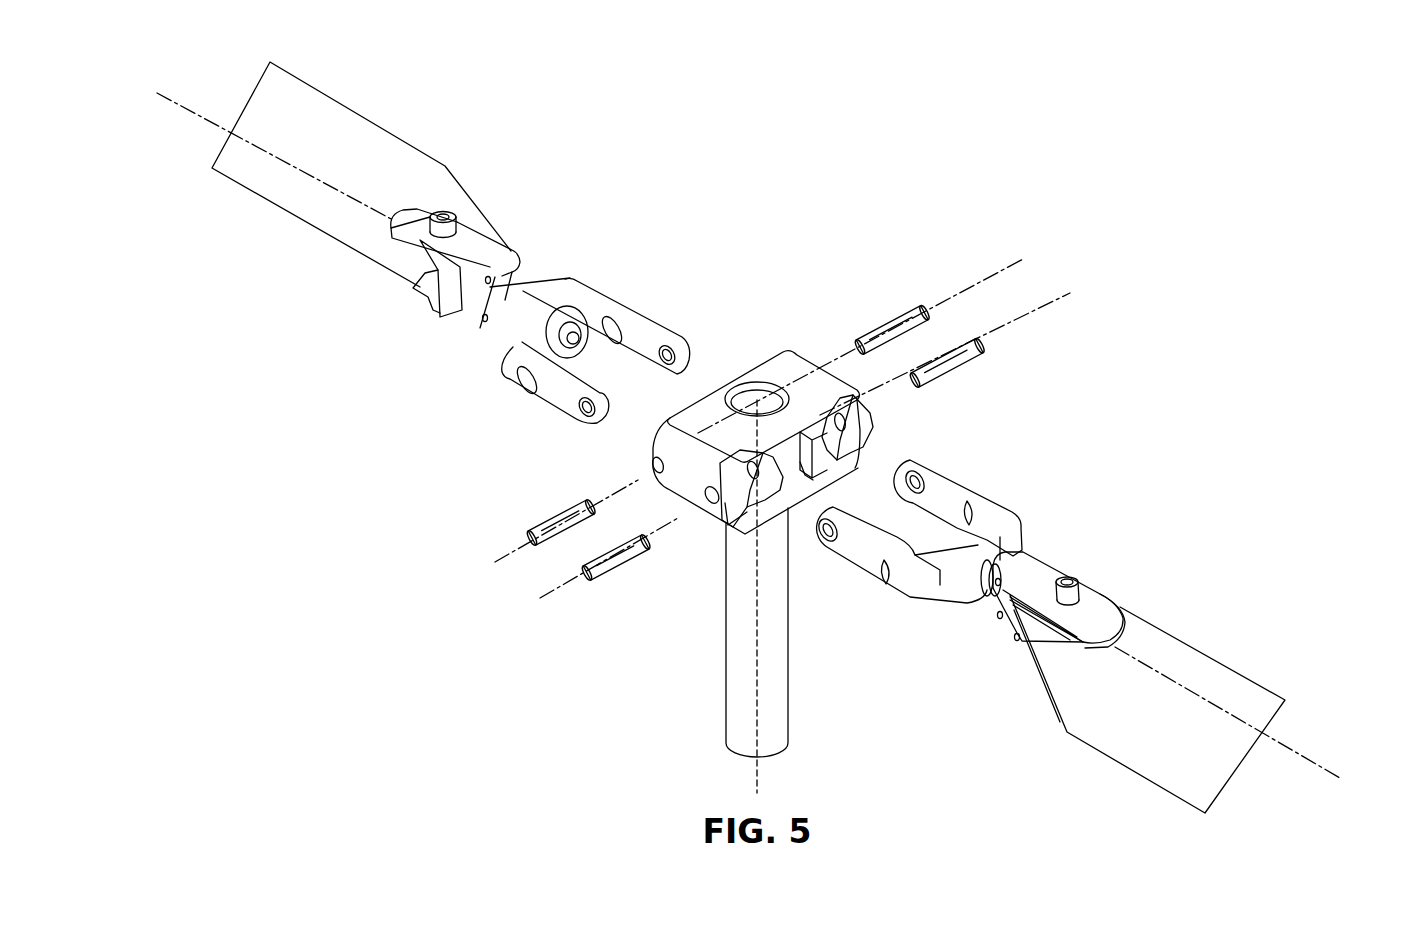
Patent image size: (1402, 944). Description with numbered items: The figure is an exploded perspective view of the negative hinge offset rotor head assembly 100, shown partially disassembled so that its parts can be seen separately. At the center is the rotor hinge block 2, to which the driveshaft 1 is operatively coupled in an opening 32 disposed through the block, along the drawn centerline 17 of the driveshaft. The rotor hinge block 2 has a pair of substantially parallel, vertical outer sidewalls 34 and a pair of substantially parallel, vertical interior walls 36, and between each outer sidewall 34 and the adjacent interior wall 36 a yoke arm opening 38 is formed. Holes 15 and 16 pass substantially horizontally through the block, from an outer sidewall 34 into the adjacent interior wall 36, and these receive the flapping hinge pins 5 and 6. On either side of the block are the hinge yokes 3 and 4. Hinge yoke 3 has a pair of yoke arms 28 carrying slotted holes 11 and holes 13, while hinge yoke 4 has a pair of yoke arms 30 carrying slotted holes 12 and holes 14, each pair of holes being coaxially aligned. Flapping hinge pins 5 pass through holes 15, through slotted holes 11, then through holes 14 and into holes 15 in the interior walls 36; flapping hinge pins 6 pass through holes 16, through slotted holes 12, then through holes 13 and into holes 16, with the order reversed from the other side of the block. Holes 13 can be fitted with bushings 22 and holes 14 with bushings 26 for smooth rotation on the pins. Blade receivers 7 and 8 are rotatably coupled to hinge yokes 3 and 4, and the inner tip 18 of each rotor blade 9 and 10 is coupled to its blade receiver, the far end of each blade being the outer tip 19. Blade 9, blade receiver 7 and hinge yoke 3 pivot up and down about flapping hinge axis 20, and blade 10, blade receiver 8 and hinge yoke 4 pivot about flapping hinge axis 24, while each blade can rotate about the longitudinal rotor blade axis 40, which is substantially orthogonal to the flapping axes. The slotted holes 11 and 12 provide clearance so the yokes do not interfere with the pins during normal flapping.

The driveshaft 1 is at (790, 660).
The rotor hinge block 2 is at (709, 374).
The hinge yoke 3 is at (565, 287).
The hinge yoke 4 is at (1002, 520).
The flapping hinge pin 5 is at (532, 538).
The flapping hinge pin 6 is at (587, 573).
The blade receiver 7 is at (485, 250).
The blade receiver 8 is at (1035, 572).
The rotor blade 9 is at (348, 165).
The rotor blade 10 is at (1153, 668).
The slotted holes 11 is at (600, 353).
The slotted holes 12 is at (963, 527).
The holes 13 is at (602, 352).
The holes 14 is at (913, 485).
The holes 15 is at (655, 465).
The holes 16 is at (841, 418).
The rotation axis 17 is at (757, 632).
The inner tip 18 is at (445, 197).
The outer tip 19 is at (250, 101).
The flapping hinge axis 20 is at (1042, 312).
The bushings 22 is at (582, 412).
The flapping hinge axis 24 is at (1003, 258).
The bushings 26 is at (908, 495).
The yoke arms 28 is at (613, 300).
The yoke arms 30 is at (893, 545).
The opening 32 is at (745, 390).
The outer sidewalls 34 is at (842, 415).
The interior walls 36 is at (853, 448).
The yoke arm opening 38 is at (868, 445).
The rotor blade axis 40 is at (157, 101).
The negative hinge offset rotor head assembly 100 is at (737, 108).